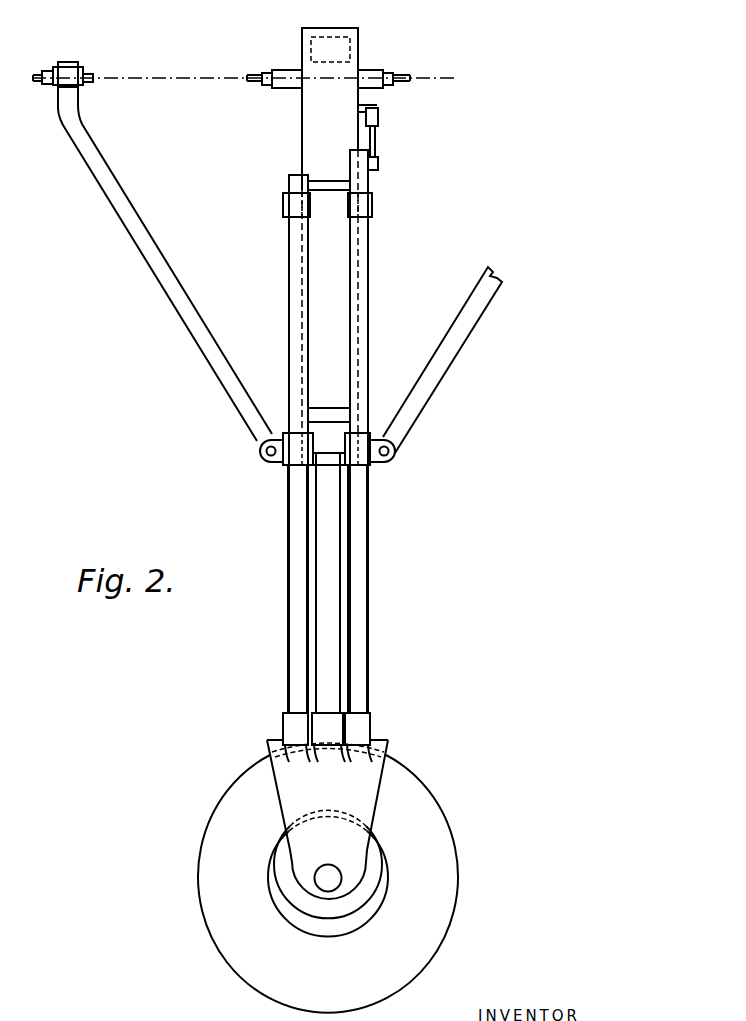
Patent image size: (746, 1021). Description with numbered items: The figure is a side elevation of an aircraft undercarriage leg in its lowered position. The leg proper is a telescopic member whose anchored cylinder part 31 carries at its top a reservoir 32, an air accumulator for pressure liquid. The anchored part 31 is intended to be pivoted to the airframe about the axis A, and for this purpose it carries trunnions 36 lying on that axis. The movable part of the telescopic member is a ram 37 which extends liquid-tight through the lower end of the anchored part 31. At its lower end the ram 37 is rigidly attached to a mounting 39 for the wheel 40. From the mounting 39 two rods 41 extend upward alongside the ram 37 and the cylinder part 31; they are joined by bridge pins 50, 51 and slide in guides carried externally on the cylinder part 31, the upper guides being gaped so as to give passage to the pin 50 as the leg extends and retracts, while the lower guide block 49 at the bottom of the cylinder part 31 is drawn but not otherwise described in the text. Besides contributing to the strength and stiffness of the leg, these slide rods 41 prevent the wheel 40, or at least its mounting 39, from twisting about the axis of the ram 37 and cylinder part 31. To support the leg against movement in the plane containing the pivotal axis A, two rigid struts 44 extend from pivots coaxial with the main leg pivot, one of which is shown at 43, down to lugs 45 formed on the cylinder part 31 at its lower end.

The anchored cylinder part 31 is at (335, 262).
The reservoir 32 is at (358, 32).
The trunnions 36 is at (283, 70).
The ram 37 is at (327, 606).
The mounting 39 is at (350, 785).
The wheel 40 is at (218, 863).
The rods 41 is at (360, 668).
The pivot 43 is at (70, 62).
The rigid struts 44 is at (188, 317).
The lugs 45 is at (262, 452).
The lower clamp block 49 is at (328, 457).
The bridge pin 50 is at (325, 410).
The bridge pin 51 is at (327, 183).
The pivotal axis A is at (452, 79).